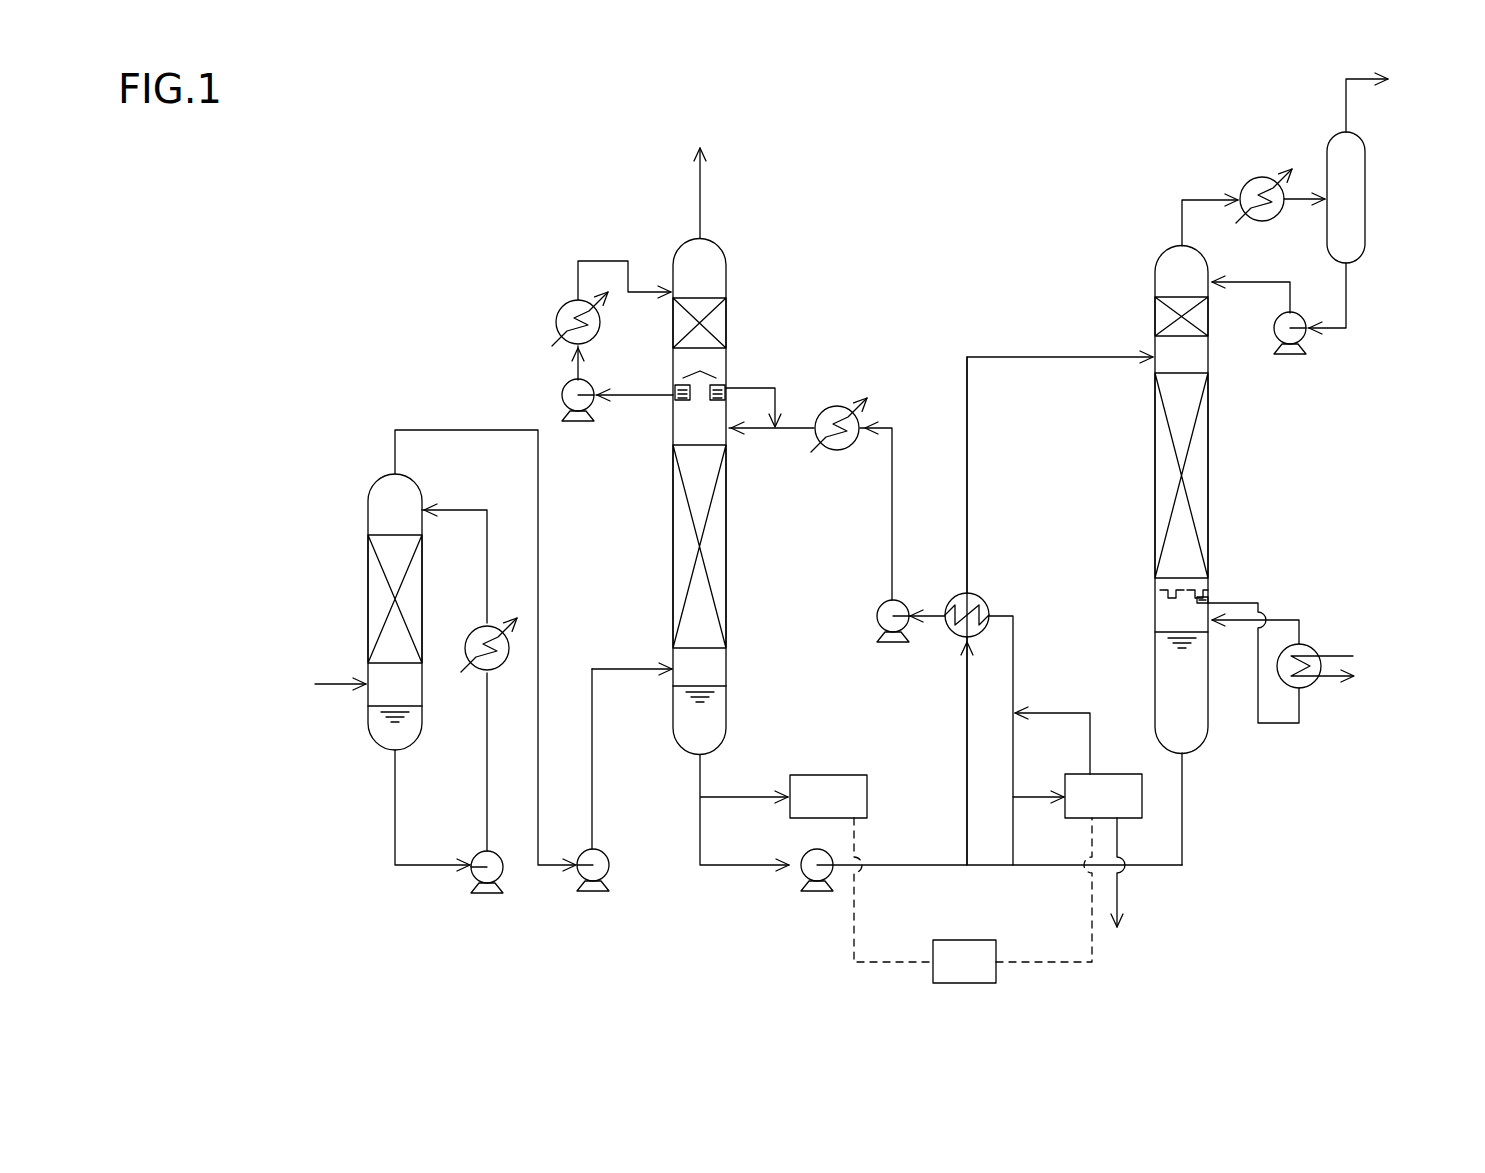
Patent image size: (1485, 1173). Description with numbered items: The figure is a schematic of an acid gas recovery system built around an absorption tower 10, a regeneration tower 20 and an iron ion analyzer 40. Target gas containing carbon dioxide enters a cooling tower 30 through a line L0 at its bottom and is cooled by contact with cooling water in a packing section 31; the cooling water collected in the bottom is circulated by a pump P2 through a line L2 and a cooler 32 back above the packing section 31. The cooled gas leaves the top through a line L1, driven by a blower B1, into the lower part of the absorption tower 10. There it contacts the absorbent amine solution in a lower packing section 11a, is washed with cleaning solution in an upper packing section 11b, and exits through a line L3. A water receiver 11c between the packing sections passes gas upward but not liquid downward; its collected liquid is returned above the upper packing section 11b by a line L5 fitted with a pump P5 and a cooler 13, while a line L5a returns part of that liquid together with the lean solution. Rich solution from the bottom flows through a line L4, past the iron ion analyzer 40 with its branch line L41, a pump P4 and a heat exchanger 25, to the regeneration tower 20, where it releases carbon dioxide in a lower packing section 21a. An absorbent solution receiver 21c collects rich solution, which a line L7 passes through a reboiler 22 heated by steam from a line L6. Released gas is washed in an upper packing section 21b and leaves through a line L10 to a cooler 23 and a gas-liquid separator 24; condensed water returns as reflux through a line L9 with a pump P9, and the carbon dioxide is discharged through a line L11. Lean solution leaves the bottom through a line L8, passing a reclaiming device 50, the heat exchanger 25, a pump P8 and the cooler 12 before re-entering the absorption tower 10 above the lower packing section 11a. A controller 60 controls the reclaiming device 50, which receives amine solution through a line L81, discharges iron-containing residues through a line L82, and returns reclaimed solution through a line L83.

The absorption tower 10 is at (660, 236).
The lower packing section 11a is at (684, 542).
The upper packing section 11b is at (722, 322).
The water receiver 11c is at (672, 393).
The cooler 12 is at (856, 455).
The cooler 13 is at (560, 307).
The regeneration tower 20 is at (1130, 243).
The lower packing section 21a is at (1200, 471).
The upper packing section 21b is at (1160, 318).
The absorbent solution receiver 21c is at (1150, 594).
The reboiler 22 is at (1312, 643).
The cooler 23 is at (1258, 178).
The gas-liquid separator 24 is at (1368, 198).
The heat exchanger 25 is at (982, 594).
The cooling tower 30 is at (348, 482).
The packing section 31 is at (367, 600).
The cooler 32 is at (474, 624).
The iron ion analyzer 40 is at (806, 773).
The reclaiming device 50 is at (1112, 772).
The controller 60 is at (945, 938).
The line L0 is at (337, 679).
The line L1 is at (466, 429).
The line L2 is at (420, 865).
The line L3 is at (702, 199).
The line L4 is at (698, 770).
The sampling line L41 is at (718, 803).
The line L5 is at (632, 390).
The line L5a is at (752, 388).
The line L6 is at (1354, 656).
The line L7 is at (1277, 728).
The line L8 is at (1050, 870).
The line L81 is at (1030, 805).
The line L82 is at (1122, 890).
The line L83 is at (1068, 728).
The line L9 is at (1253, 294).
The line L10 is at (1180, 214).
The line L11 is at (1340, 110).
The pump P2 is at (487, 894).
The pump P4 is at (812, 895).
The pump P5 is at (568, 422).
The pump P8 is at (866, 628).
The pump P9 is at (1292, 362).
The blower B1 is at (610, 868).